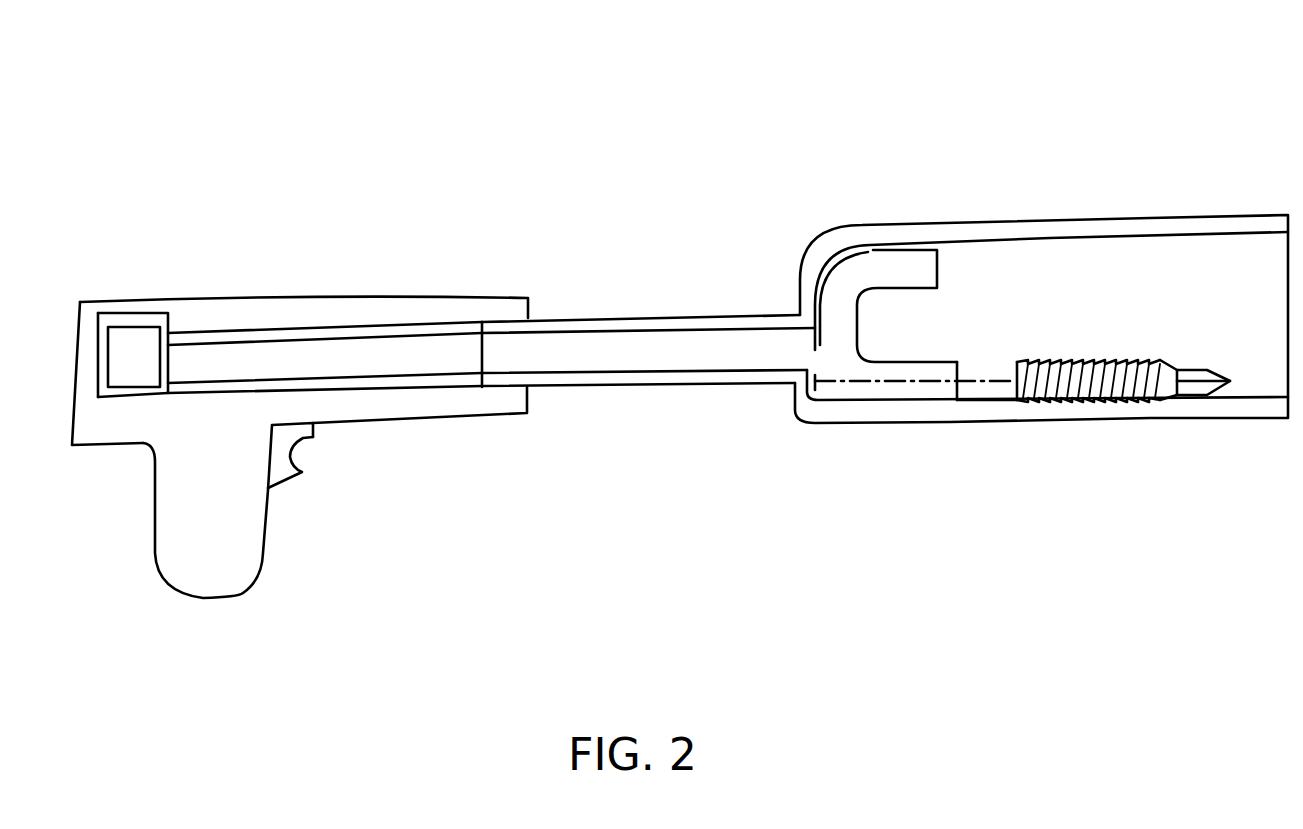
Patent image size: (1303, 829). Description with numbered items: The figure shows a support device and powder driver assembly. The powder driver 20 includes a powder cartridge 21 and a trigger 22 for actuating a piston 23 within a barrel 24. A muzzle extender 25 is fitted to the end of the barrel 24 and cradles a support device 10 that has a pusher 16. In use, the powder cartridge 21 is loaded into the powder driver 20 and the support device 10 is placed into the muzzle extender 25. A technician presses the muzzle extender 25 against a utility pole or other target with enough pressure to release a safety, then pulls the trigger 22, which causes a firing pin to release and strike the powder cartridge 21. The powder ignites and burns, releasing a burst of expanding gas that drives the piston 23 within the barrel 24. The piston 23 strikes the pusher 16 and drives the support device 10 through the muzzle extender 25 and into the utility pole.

The support device 10 is at (991, 358).
The pusher 16 is at (650, 335).
The powder driver 20 is at (697, 67).
The powder cartridge 21 is at (132, 328).
The trigger 22 is at (287, 480).
The piston 23 is at (272, 340).
The barrel 24 is at (423, 295).
The muzzle extender 25 is at (963, 223).